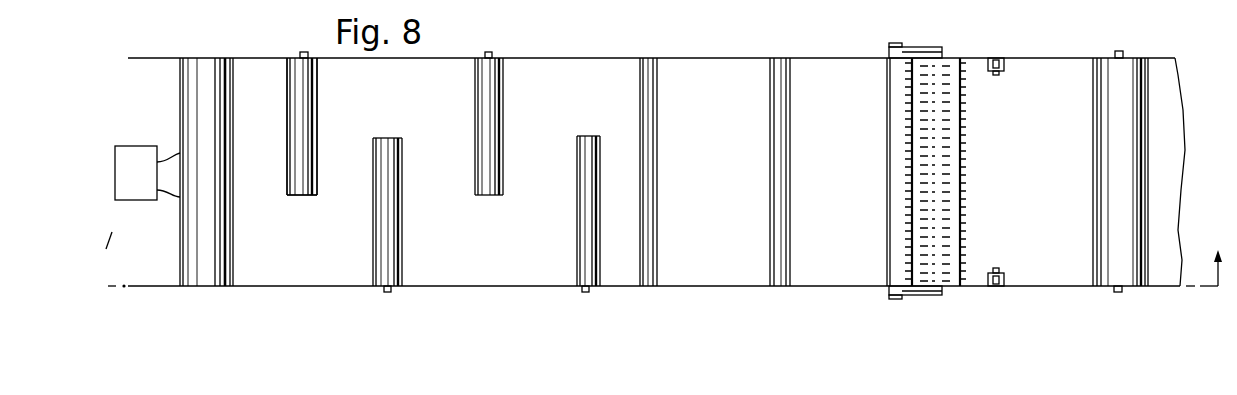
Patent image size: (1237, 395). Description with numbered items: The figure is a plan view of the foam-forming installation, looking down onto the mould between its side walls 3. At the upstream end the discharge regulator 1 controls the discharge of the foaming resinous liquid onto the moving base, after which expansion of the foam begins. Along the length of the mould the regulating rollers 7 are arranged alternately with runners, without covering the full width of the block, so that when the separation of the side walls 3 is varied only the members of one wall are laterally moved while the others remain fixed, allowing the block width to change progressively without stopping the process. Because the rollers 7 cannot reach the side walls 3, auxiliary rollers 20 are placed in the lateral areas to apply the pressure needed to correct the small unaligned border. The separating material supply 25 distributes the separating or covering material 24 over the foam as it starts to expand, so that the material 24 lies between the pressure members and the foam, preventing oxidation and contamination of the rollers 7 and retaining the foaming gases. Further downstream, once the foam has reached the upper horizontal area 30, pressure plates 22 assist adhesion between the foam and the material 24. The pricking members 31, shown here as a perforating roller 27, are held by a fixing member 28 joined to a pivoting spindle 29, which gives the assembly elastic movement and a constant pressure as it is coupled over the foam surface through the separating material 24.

The discharge regulator 1 is at (132, 150).
The side walls 3 is at (616, 58).
The regulating rollers 7 is at (583, 182).
The auxiliary rollers 20 is at (997, 58).
The pressure plates 22 is at (817, 250).
The separating or covering material 24 is at (260, 66).
The separating material supply 25 is at (203, 86).
The perforating roller 27 is at (940, 80).
The fixing member 28 is at (917, 297).
The pivoting spindle 29 is at (896, 45).
The upper horizontal area 30 is at (997, 287).
The pricking members 31 is at (964, 136).